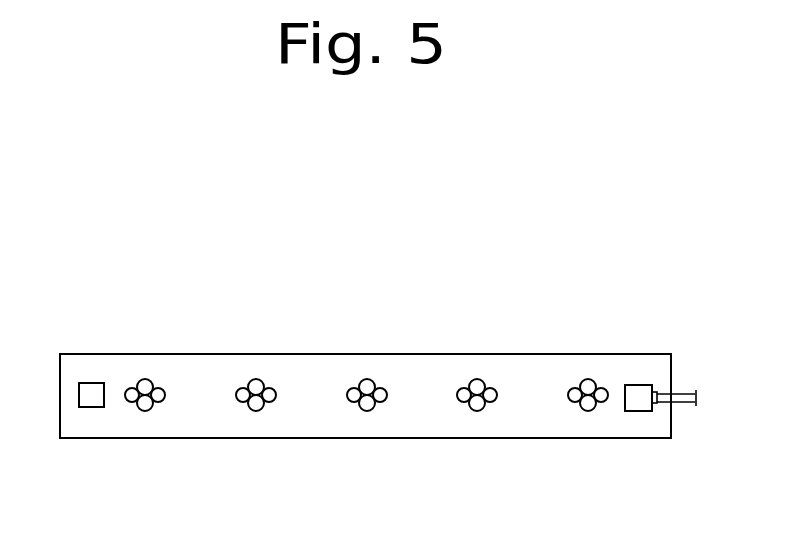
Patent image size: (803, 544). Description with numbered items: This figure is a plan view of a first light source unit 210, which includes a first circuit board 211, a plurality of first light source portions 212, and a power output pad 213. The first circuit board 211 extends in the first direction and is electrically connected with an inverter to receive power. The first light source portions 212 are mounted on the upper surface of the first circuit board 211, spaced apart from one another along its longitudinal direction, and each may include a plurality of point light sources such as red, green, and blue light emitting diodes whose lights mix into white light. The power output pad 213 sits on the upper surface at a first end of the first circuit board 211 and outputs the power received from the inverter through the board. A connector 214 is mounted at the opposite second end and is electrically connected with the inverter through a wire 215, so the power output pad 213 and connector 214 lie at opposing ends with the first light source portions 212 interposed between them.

The first light source unit 210 is at (644, 236).
The first circuit board 211 is at (501, 367).
The first light source portions 212 is at (588, 388).
The power output pad 213 is at (90, 388).
The connector 214 is at (636, 411).
The wire 215 is at (683, 393).